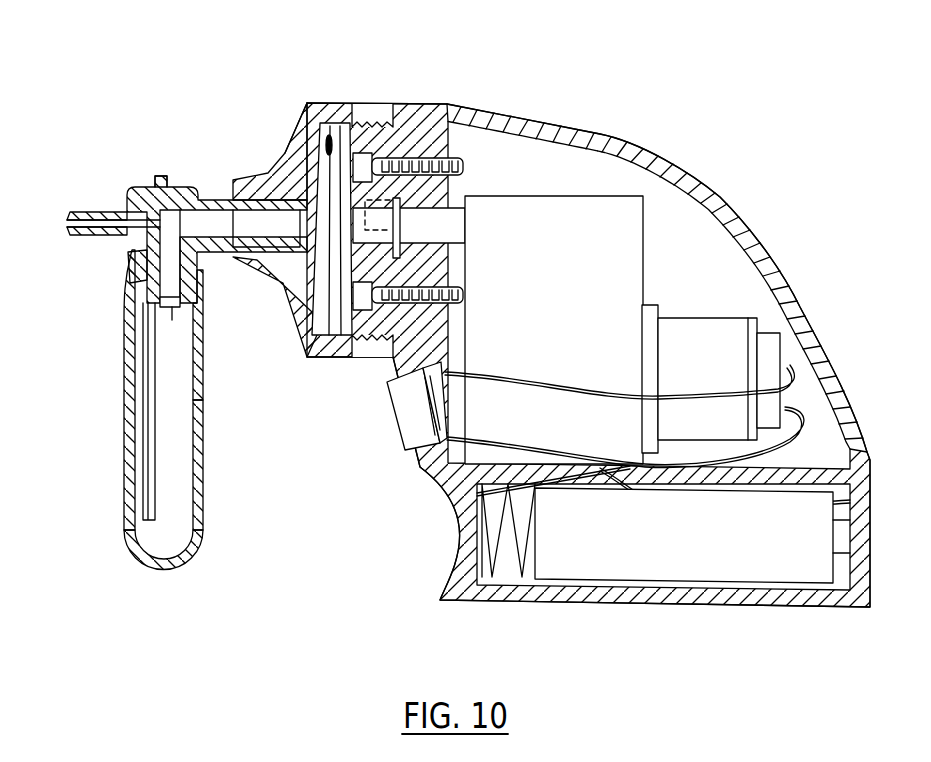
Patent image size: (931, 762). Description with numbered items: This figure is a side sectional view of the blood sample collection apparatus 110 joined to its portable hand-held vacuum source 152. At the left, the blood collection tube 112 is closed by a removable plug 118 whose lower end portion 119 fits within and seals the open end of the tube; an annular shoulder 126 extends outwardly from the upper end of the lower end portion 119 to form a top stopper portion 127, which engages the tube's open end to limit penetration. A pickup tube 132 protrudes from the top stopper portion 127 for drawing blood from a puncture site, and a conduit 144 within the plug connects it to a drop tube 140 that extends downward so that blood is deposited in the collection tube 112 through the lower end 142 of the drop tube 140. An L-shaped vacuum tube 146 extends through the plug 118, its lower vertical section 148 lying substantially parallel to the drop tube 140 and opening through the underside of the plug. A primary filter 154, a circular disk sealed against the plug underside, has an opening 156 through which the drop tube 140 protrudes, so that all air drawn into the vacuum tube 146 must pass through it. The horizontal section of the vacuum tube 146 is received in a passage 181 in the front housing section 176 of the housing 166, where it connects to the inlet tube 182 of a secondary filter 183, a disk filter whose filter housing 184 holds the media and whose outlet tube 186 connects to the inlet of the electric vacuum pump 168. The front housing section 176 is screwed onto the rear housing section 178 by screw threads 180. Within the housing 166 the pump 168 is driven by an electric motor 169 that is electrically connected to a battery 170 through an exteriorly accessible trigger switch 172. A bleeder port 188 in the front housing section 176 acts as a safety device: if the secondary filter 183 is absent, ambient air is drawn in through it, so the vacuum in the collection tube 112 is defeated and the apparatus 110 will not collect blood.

The blood sample collection apparatus 110 is at (740, 107).
The blood collection tube 112 is at (198, 508).
The removable plug 118 is at (170, 184).
The lower end portion 119 is at (190, 278).
The annular shoulder 126 is at (126, 272).
The top stopper portion 127 is at (132, 243).
The pickup tube 132 is at (93, 208).
The drop tube 140 is at (148, 438).
The lower end 142 is at (137, 533).
The conduit 144 is at (152, 197).
The L-shaped vacuum tube 146 is at (197, 230).
The lower vertical section 148 is at (193, 313).
The hand-held vacuum source 152 is at (476, 84).
The primary filter 154 is at (172, 318).
The opening 156 is at (122, 340).
The housing 166 is at (532, 119).
The electric vacuum pump 168 is at (628, 240).
The electric motor 169 is at (720, 340).
The battery 170 is at (713, 567).
The trigger switch 172 is at (402, 437).
The front housing section 176 is at (313, 103).
The rear housing section 178 is at (597, 134).
The screw threads 180 is at (370, 124).
The passage 181 is at (289, 160).
The inlet tube 182 is at (255, 226).
The secondary filter 183 is at (329, 136).
The filter housing 184 is at (318, 330).
The outlet tube 186 is at (418, 104).
The bleeder port 188 is at (333, 358).